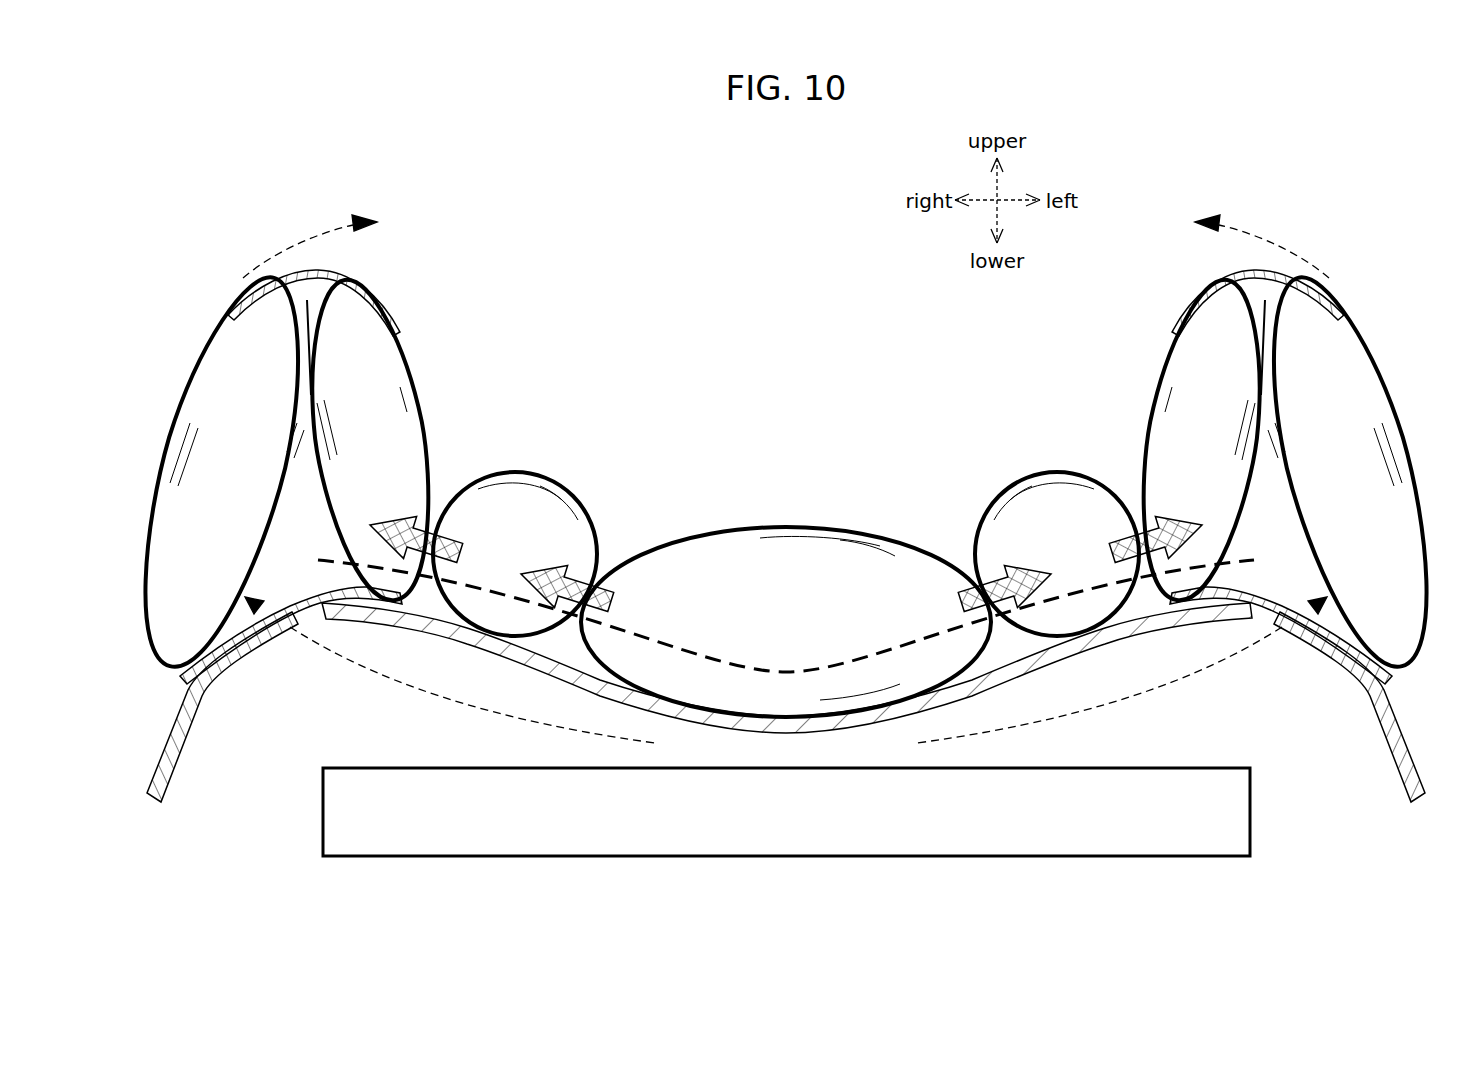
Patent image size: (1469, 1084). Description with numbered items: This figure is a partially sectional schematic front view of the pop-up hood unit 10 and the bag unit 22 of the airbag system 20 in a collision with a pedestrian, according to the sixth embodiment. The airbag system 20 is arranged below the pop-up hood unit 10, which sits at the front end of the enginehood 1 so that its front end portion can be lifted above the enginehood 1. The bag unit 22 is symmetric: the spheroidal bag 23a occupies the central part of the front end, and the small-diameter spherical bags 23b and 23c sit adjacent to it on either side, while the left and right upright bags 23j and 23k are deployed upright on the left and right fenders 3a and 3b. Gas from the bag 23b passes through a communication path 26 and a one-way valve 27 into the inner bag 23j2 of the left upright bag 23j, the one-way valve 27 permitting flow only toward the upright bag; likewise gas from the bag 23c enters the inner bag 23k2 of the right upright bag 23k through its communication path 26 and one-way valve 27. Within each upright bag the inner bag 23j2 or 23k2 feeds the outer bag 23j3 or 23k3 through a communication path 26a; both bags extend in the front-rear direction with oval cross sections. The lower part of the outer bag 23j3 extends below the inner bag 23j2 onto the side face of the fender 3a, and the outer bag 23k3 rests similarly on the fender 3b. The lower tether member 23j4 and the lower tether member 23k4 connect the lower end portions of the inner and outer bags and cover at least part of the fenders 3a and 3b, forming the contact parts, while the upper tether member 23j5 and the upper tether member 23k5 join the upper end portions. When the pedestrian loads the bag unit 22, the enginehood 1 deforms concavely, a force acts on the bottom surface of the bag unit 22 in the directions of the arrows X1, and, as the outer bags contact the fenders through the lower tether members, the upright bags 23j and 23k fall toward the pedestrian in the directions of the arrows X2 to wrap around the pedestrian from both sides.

The enginehood 1 is at (722, 720).
The fender on the left side 3a is at (1317, 647).
The fender on the right side 3b is at (258, 647).
The pop-up hood unit 10 is at (825, 670).
The airbag system 20 is at (1252, 806).
The bag unit 22 is at (783, 458).
The bag 23a is at (795, 525).
The bag 23b is at (1010, 483).
The bag 23c is at (560, 484).
The upright bag on the left side 23j is at (1272, 466).
The inner bag 23j2 is at (1193, 360).
The outer bag 23j3 is at (1354, 392).
The lower tether member 23j4 is at (1283, 590).
The upper tether member 23j5 is at (1213, 273).
The upright bag on the right side 23k is at (298, 466).
The inner bag 23k2 is at (377, 360).
The outer bag 23k3 is at (218, 393).
The lower tether member 23k4 is at (287, 590).
The upper tether member 23k5 is at (357, 273).
The communication path 26 is at (462, 525).
The communication path 26a is at (307, 357).
The one-way valve 27 is at (423, 494).
The arrows X1 is at (358, 667).
The arrows X2 is at (303, 243).